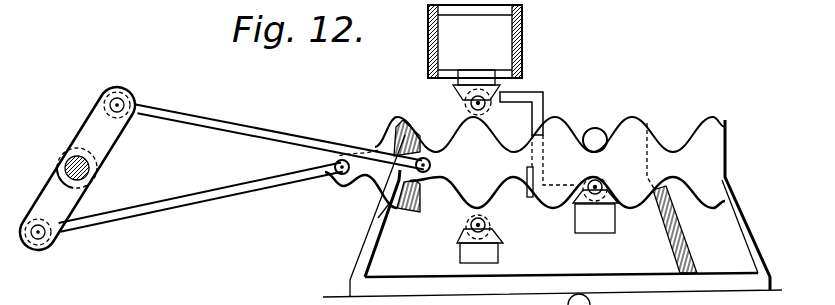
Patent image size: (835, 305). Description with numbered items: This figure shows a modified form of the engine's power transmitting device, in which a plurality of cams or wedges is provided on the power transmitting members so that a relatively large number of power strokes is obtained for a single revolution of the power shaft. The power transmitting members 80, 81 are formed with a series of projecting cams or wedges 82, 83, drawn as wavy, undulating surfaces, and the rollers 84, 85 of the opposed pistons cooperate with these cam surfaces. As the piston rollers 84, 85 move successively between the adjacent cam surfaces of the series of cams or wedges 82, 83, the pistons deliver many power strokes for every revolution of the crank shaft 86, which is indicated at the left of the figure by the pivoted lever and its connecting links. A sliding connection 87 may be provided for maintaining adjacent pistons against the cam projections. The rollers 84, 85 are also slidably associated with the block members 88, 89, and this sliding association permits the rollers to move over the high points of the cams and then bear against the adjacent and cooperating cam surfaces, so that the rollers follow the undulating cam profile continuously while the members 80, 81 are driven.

The power transmitting member 80 is at (484, 181).
The power transmitting member 81 is at (409, 122).
The projecting cams or wedges 82 is at (495, 128).
The projecting cams or wedges 83 is at (415, 207).
The roller 84 is at (493, 85).
The roller 85 is at (490, 223).
The crank shaft 86 is at (90, 168).
The sliding connection 87 is at (543, 148).
The block member 88 is at (455, 90).
The block member 89 is at (493, 255).